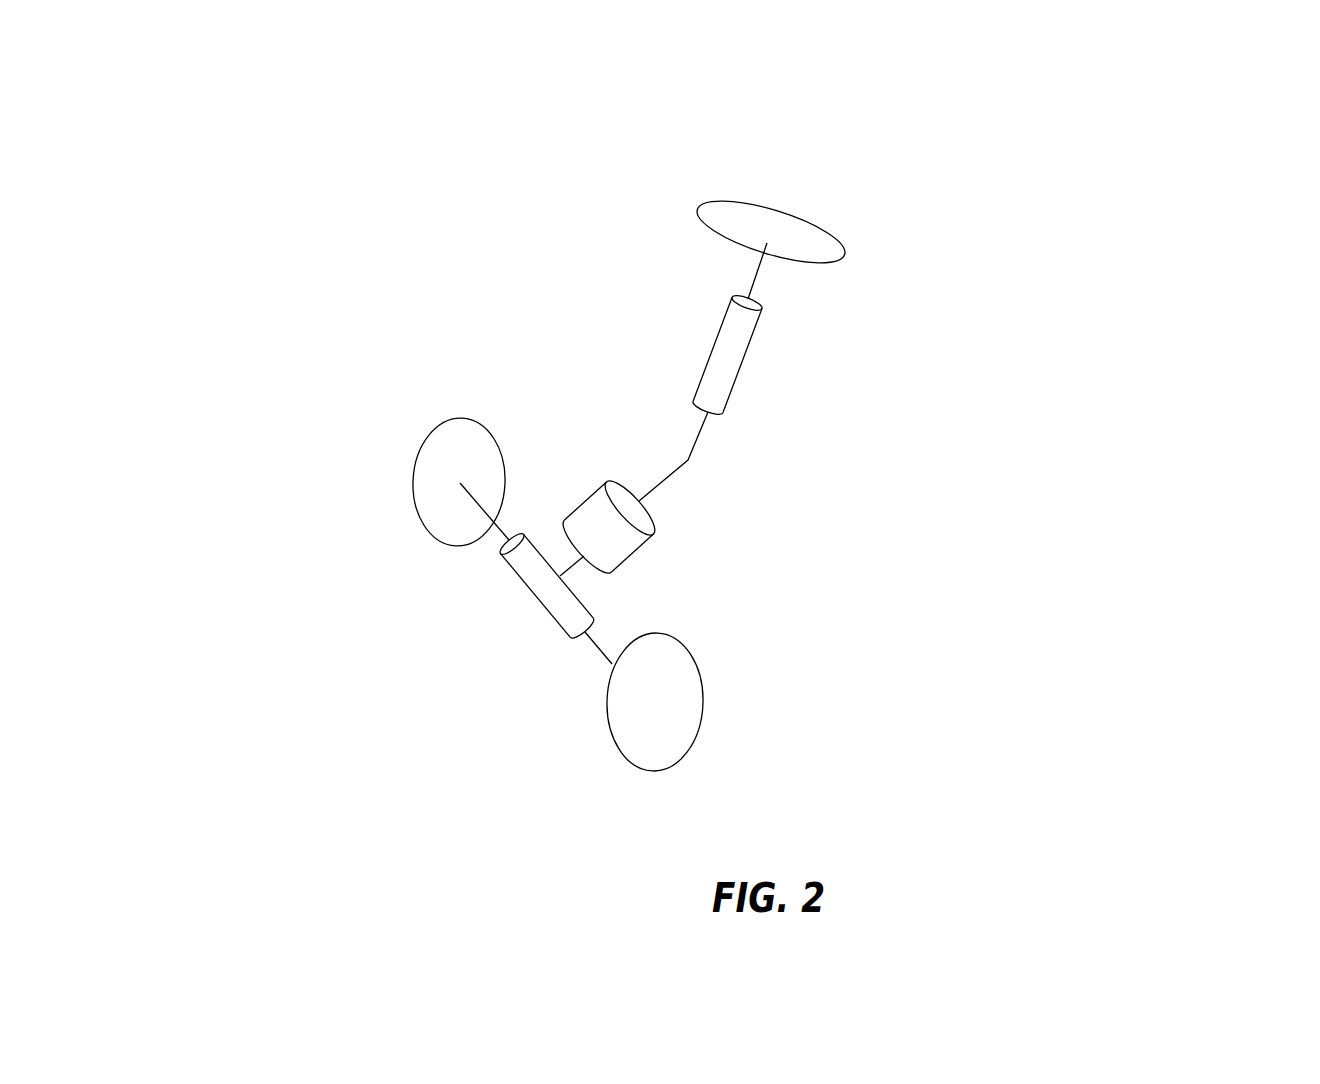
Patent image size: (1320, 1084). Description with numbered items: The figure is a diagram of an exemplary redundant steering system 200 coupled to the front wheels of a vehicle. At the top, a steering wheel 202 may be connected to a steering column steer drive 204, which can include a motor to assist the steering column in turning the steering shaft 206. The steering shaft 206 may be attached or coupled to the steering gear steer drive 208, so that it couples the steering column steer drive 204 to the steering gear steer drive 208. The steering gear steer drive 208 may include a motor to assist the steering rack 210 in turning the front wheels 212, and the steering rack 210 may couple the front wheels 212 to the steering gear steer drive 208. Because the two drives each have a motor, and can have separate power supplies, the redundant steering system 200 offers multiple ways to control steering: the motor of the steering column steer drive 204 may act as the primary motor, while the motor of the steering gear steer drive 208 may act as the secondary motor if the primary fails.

The redundant steering system 200 is at (330, 159).
The steering wheel 202 is at (861, 239).
The steering column steer drive 204 is at (770, 344).
The steering shaft 206 is at (686, 477).
The steering gear steer drive 208 is at (673, 526).
The steering rack 210 is at (504, 586).
The front wheels 212 is at (404, 444).